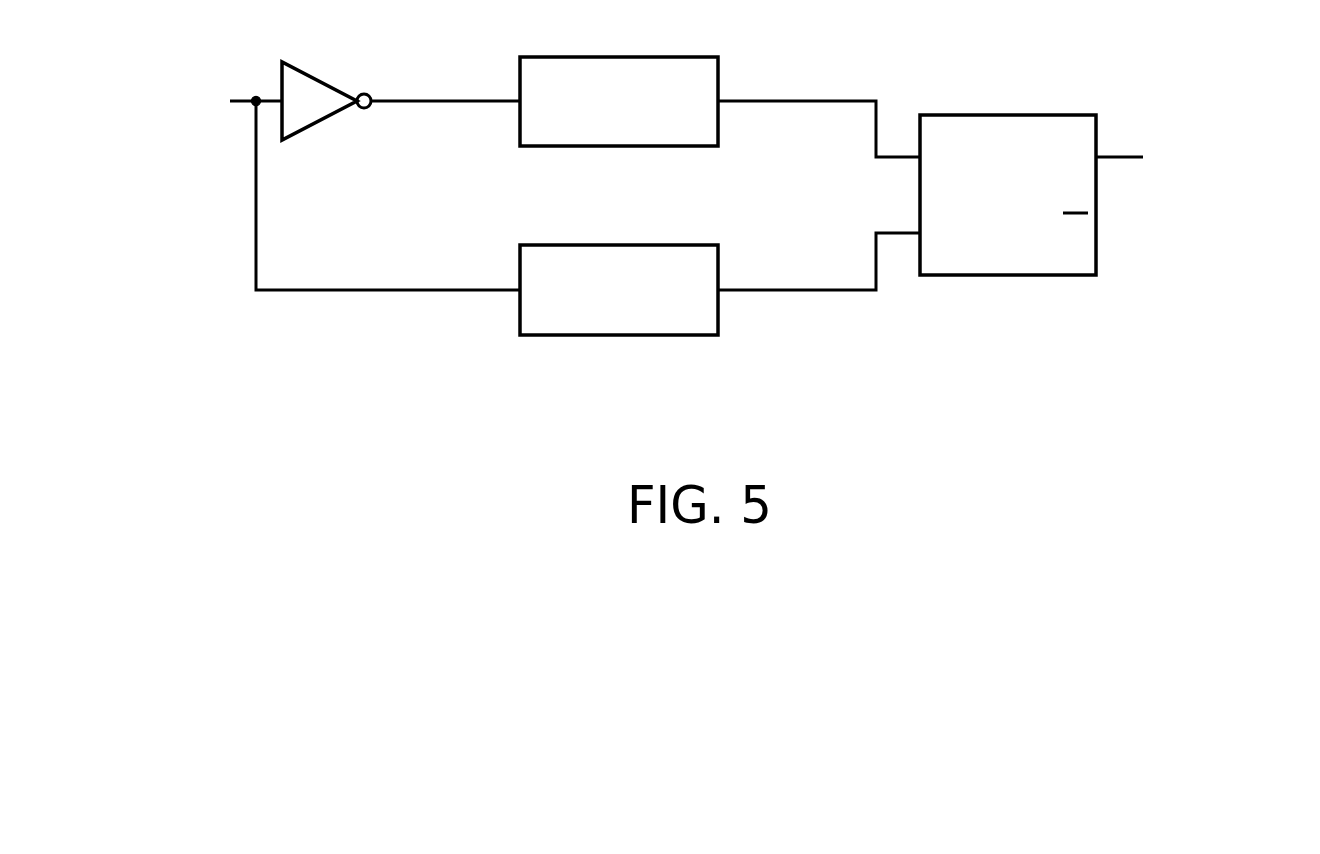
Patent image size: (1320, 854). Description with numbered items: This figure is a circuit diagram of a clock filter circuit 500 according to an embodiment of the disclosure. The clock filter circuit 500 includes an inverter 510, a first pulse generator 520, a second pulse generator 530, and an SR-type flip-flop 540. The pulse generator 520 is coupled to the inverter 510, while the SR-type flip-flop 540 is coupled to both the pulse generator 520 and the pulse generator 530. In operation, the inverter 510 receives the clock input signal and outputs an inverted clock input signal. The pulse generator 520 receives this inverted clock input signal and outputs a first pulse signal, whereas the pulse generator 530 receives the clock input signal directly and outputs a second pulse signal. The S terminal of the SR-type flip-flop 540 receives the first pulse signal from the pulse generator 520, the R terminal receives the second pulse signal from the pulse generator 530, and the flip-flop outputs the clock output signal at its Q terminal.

The clock filter circuit 500 is at (1244, 412).
The inverter 510 is at (332, 83).
The pulse generator 520 is at (675, 56).
The pulse generator 530 is at (675, 244).
The SR-type flip-flop 540 is at (1053, 114).